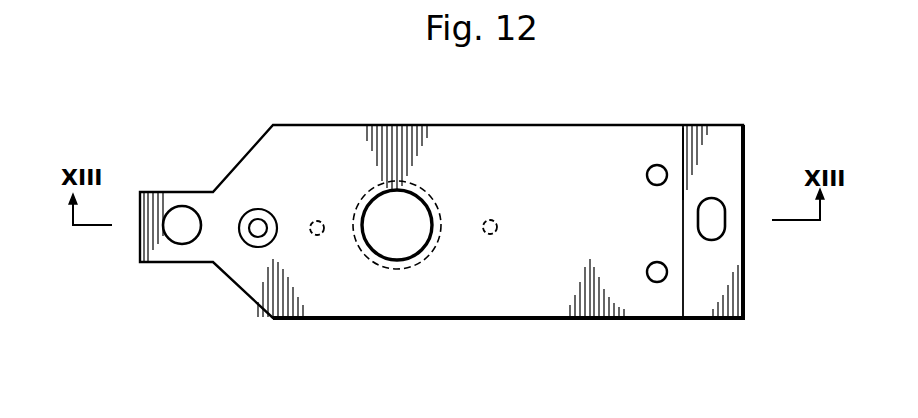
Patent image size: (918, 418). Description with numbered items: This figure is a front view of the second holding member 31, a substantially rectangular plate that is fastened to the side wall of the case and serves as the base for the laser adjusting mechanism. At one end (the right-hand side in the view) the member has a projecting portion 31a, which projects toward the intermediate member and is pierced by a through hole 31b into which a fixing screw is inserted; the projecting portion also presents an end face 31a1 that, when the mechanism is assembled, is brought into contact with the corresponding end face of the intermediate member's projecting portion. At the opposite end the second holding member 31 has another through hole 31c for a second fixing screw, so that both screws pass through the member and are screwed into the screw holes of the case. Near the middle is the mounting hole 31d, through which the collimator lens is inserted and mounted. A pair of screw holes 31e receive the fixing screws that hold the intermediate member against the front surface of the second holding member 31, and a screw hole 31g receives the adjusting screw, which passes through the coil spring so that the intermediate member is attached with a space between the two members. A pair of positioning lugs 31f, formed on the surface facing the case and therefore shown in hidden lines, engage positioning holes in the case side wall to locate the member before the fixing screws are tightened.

The second holding member 31 is at (613, 102).
The projecting portion 31a is at (732, 147).
The end face 31a1 is at (683, 151).
The through hole 31b is at (714, 224).
The through hole 31c is at (175, 208).
The mounting hole 31d is at (418, 207).
The screw holes 31e is at (652, 263).
The positioning lugs 31f is at (270, 212).
The screw hole 31g is at (258, 212).